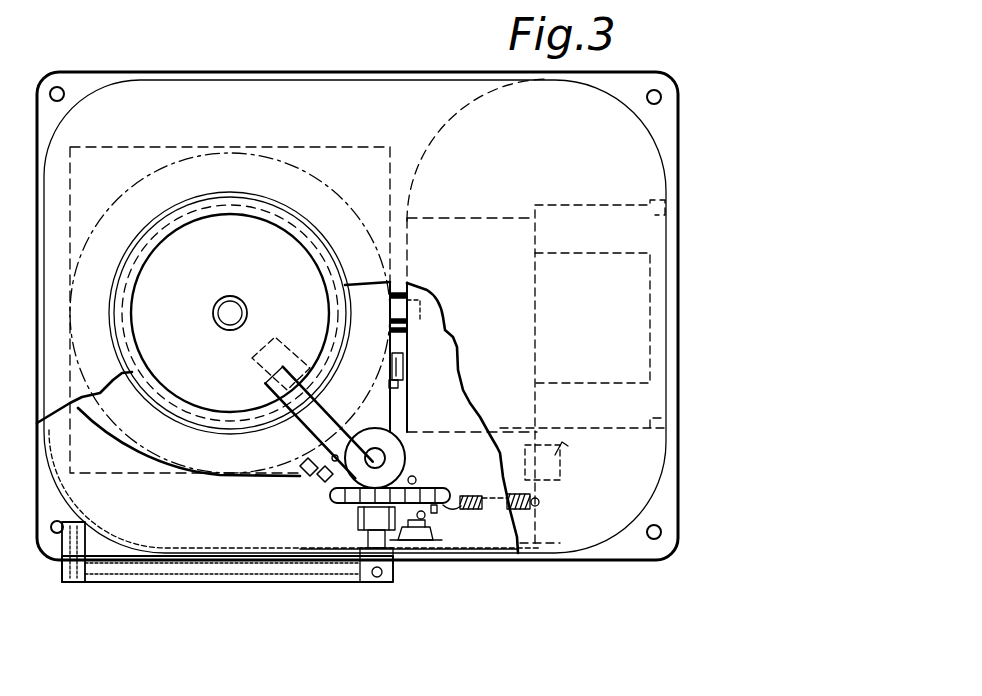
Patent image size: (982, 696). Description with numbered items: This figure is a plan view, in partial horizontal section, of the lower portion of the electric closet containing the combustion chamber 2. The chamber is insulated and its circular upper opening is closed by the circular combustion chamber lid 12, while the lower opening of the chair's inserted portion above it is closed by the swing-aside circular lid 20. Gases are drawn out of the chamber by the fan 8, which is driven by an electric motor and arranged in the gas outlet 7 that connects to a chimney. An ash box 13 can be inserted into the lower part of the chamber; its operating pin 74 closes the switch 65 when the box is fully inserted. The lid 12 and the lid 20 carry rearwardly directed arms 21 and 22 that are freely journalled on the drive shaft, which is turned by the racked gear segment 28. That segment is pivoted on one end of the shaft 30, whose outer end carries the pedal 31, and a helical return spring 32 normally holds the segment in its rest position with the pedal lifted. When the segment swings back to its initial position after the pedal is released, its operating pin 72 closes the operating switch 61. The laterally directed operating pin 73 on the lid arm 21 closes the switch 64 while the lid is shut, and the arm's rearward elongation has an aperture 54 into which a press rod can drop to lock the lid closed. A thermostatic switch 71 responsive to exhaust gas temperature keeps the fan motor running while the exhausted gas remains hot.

The combustion chamber 2 is at (365, 143).
The circular lid 20 is at (190, 247).
The fan 8 is at (638, 288).
The gas outlet 7 is at (652, 408).
The ash box 13 is at (392, 345).
The switch 65 is at (403, 370).
The operating pin 74 is at (394, 383).
The arm 22 is at (330, 390).
The arm 21 is at (323, 450).
The aperture 54 is at (405, 474).
The racked gear segment 28 is at (440, 489).
The helical return spring 32 is at (468, 497).
The combustion chamber lid 12 is at (140, 428).
The thermostatic switch 71 is at (555, 470).
The switch 64 is at (310, 480).
The operating pin 73 is at (328, 482).
The shaft 30 is at (393, 553).
The operating switch 61 is at (432, 528).
The operating pin 72 is at (438, 513).
The pedal 31 is at (162, 567).